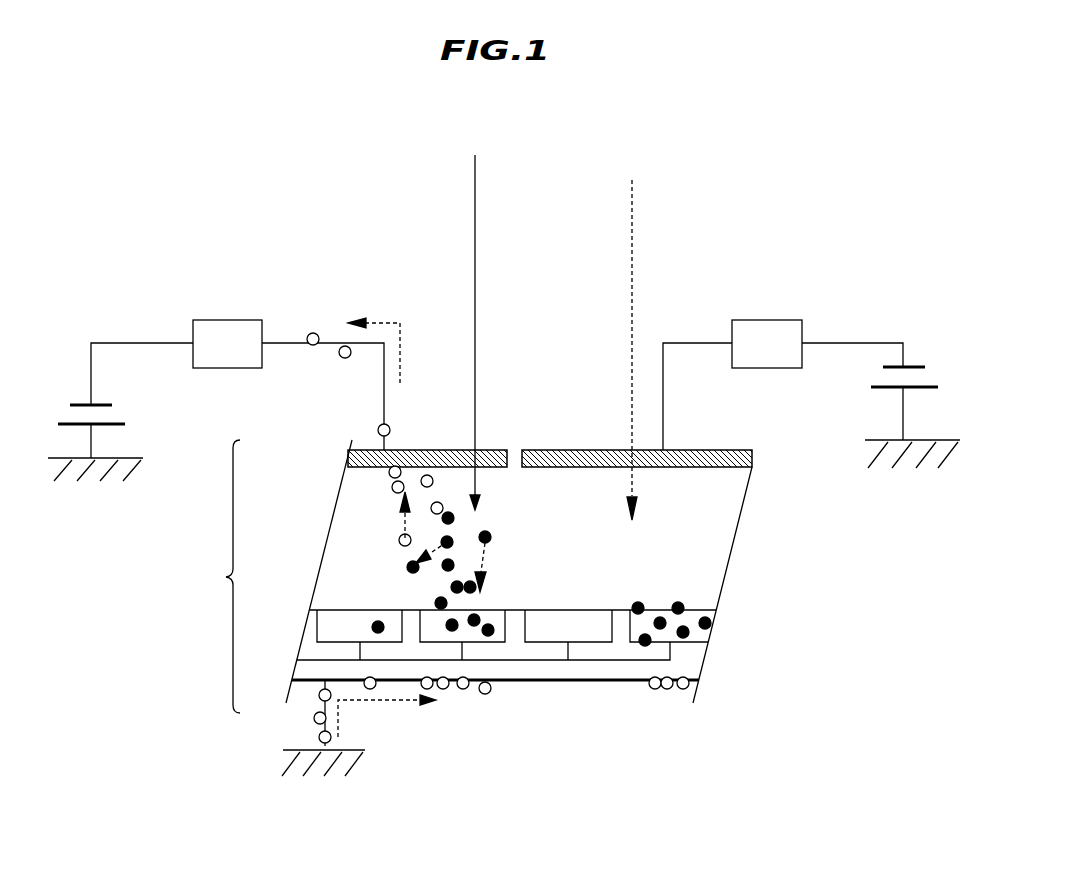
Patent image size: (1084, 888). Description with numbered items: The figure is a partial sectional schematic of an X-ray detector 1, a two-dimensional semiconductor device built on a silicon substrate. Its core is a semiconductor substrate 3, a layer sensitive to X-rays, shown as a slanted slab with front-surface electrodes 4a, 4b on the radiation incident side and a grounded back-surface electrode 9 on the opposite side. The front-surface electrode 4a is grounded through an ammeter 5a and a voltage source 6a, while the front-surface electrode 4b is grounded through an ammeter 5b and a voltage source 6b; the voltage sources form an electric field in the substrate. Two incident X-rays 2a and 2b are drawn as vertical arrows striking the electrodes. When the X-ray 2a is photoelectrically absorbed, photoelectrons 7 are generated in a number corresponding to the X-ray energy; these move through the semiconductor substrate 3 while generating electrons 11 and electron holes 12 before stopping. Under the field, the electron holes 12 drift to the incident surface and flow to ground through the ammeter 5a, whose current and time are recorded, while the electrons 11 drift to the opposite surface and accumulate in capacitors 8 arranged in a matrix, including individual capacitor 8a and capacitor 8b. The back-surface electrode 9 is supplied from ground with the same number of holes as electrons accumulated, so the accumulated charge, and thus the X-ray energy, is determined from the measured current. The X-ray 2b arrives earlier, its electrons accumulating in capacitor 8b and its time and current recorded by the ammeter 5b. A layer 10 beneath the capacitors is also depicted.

The X-ray detector 1 is at (220, 576).
The X-ray 2a is at (475, 212).
The X-ray 2b is at (632, 220).
The semiconductor substrate 3 is at (356, 493).
The front-surface electrode 4a is at (430, 448).
The front-surface electrode 4b is at (712, 448).
The ammeter 5a is at (230, 318).
The ammeter 5b is at (767, 318).
The voltage source 6a is at (84, 405).
The voltage source 6b is at (912, 366).
The photoelectrons 7 is at (452, 518).
The capacitors 8 is at (332, 625).
The capacitor 8a is at (477, 634).
The capacitor 8b is at (665, 634).
The back-surface electrode 9 is at (590, 682).
The conductive layer 10 is at (552, 662).
The electrons 11 is at (491, 540).
The electron holes 12 is at (396, 563).